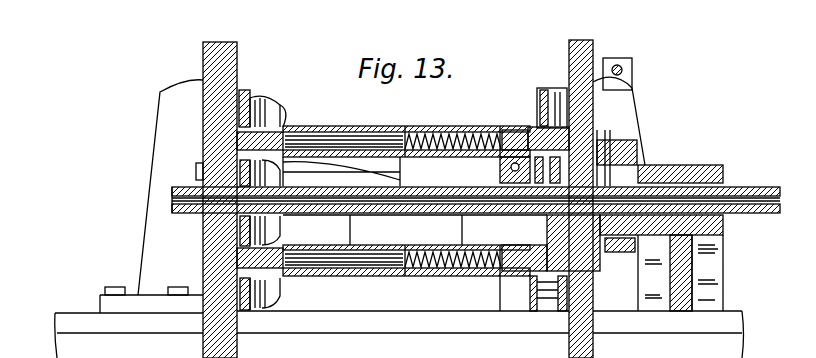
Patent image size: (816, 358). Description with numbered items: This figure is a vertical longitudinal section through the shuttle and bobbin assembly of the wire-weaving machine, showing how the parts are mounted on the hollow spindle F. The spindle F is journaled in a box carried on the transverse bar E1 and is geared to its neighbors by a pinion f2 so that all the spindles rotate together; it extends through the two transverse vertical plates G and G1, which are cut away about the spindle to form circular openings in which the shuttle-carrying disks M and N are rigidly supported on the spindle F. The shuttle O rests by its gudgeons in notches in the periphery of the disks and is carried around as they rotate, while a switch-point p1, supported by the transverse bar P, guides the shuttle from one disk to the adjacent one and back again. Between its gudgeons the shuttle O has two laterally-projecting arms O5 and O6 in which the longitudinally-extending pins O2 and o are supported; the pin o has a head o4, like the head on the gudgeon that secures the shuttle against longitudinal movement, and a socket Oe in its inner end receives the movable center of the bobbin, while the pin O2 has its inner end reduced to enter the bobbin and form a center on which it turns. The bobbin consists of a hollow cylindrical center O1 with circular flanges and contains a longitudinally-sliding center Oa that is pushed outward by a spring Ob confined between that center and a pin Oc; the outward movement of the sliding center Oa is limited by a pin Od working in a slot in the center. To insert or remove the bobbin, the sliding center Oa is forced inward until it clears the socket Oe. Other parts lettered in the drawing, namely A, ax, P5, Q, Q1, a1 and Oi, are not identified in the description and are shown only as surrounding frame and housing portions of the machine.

The transverse vertical plate G is at (218, 44).
The transverse vertical plate G1 is at (580, 42).
The hollow spindle F is at (766, 186).
The shuttle-carrying disk N is at (196, 172).
The base A is at (632, 322).
The base part ax is at (57, 350).
The pin O2 is at (203, 140).
The hollow cylindrical center O1 is at (474, 128).
The spring Ob is at (447, 128).
The pin Oc is at (412, 128).
The longitudinally-sliding center Oa is at (520, 130).
The pin Od is at (510, 128).
The transverse bar P is at (245, 92).
The cap P5 is at (265, 96).
The laterally-projecting arm O6 is at (282, 118).
The switch-point p1 is at (240, 236).
The lever Q is at (167, 237).
The shuttle O is at (365, 170).
The laterally-projecting arm O5 is at (545, 128).
The socket Oe is at (545, 280).
The chamber Oi is at (487, 227).
The chamber a1 is at (416, 228).
The arm Q1 is at (619, 122).
The pin o is at (600, 135).
The head o4 is at (605, 140).
The pinion f2 is at (625, 160).
The shuttle-carrying disk M is at (640, 166).
The transverse bar E1 is at (700, 276).